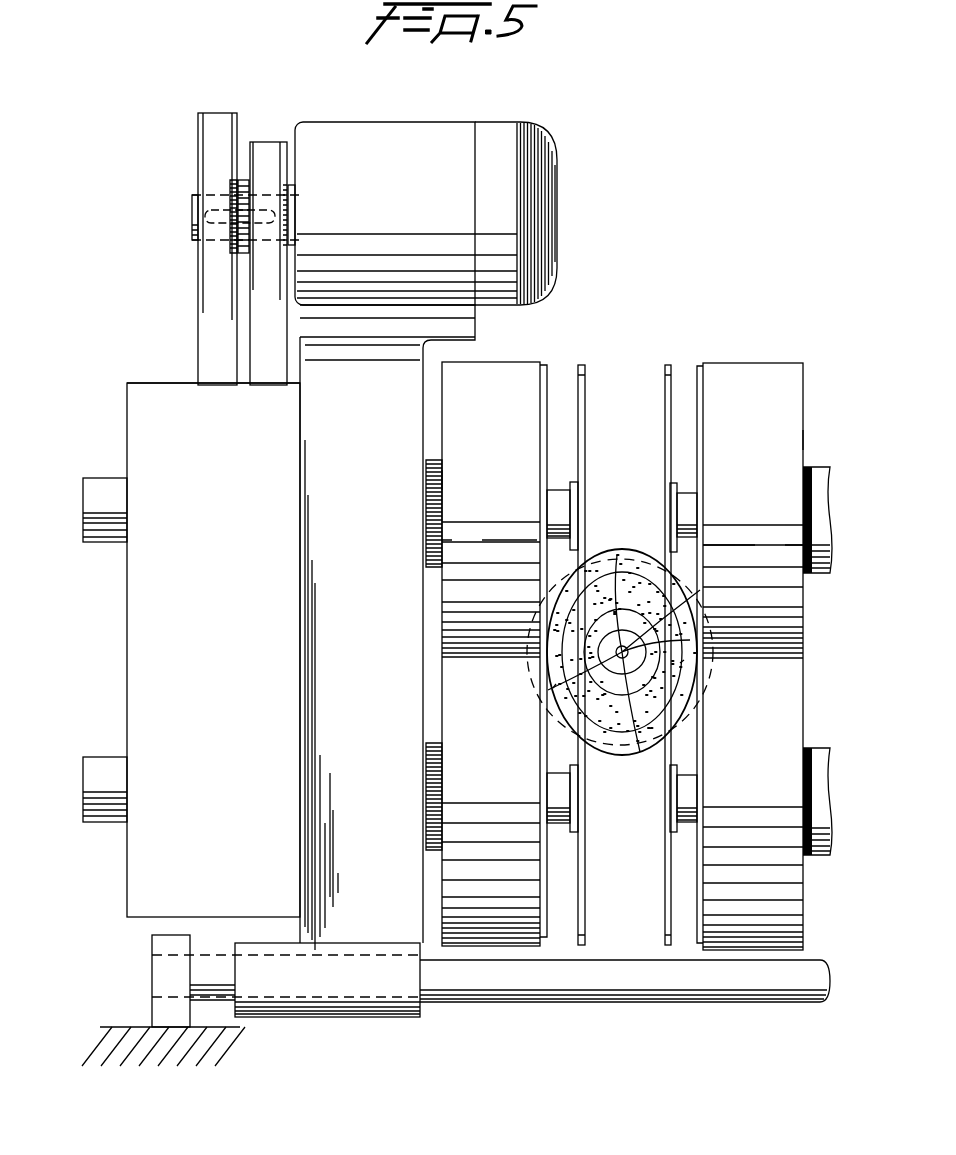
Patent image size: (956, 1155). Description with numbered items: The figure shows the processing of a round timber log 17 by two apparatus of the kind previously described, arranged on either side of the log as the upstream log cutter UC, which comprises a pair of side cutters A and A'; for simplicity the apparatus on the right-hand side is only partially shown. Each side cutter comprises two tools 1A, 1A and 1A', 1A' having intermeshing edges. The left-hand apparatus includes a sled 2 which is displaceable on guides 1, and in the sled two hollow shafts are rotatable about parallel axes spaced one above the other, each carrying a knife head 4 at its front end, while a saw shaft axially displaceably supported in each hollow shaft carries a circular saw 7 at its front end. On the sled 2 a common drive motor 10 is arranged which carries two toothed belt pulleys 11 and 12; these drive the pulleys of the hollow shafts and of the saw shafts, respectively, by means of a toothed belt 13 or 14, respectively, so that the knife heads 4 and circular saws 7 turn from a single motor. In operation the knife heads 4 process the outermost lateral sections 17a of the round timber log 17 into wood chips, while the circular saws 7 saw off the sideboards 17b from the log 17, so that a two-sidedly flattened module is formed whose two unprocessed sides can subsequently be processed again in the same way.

The guides 1 is at (212, 973).
The tools 1A is at (409, 700).
The tools 1A' is at (806, 722).
The sled 2 is at (340, 985).
The knife head 4 is at (500, 375).
The circular saw 7 is at (665, 390).
The common drive motor 10 is at (390, 131).
The toothed belt pulley 11 is at (283, 165).
The toothed belt pulley 12 is at (233, 140).
The toothed belt 13 is at (263, 333).
The toothed belt 14 is at (220, 270).
The round timber log 17 is at (626, 556).
The outermost lateral sections 17a is at (535, 612).
The sideboards 17b is at (553, 688).
The side cutter A is at (594, 316).
The side cutter A' is at (793, 331).
The upstream log cutter UC is at (625, 376).